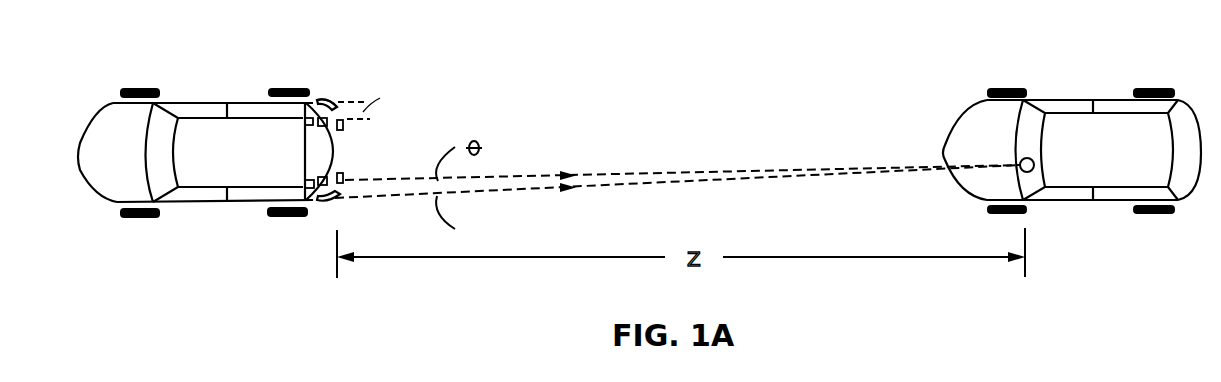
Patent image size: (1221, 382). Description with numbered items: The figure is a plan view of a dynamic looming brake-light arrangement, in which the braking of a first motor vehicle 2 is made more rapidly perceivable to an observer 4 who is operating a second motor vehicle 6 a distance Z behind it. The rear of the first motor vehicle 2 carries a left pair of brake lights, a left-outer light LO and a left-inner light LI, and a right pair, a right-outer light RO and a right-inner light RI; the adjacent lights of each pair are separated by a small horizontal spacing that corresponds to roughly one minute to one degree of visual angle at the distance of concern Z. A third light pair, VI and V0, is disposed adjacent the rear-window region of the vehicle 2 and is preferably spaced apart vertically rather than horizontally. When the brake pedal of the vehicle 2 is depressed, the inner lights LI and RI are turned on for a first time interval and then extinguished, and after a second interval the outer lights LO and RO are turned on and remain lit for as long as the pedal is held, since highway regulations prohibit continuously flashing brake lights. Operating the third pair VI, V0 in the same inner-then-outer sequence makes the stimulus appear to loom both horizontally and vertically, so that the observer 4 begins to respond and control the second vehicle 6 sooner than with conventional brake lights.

The first motor vehicle 2 is at (242, 144).
The observer 4 is at (1045, 162).
The second motor vehicle 6 is at (1072, 115).
The right-outer brake light RO is at (332, 93).
The right-inner brake light RI is at (347, 128).
The left-inner brake light LI is at (350, 175).
The left-outer brake light LO is at (320, 213).
The third light (vertical outer) V0 is at (302, 120).
The third light (vertical inner) VI is at (321, 128).